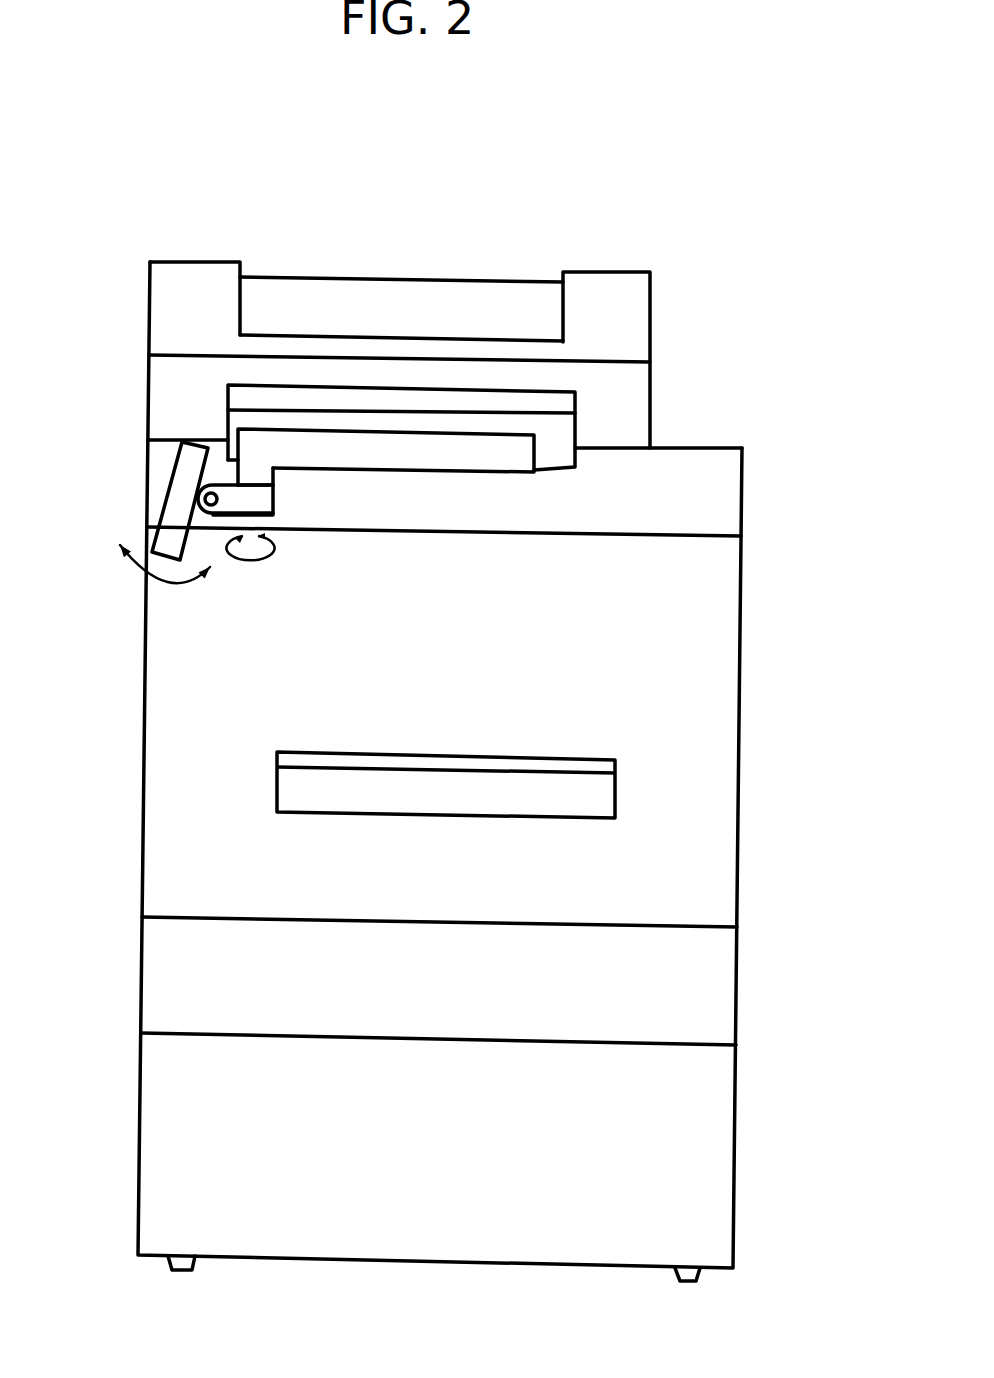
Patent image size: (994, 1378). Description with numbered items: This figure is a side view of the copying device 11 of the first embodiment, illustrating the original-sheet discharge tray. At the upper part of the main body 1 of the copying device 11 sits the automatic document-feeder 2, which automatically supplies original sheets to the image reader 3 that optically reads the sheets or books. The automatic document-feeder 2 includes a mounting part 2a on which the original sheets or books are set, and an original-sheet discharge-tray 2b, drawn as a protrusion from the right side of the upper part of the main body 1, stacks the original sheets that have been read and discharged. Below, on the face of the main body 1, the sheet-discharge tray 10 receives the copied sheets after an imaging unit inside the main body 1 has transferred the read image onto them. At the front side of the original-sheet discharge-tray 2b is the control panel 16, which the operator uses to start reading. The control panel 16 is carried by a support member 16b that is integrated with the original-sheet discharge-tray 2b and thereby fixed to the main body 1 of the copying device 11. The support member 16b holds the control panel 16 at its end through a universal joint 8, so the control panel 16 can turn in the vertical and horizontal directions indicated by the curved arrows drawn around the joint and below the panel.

The main body 1 is at (745, 568).
The automatic document-feeder 2 is at (612, 270).
The mounting part 2a is at (472, 297).
The original-sheet discharge-tray 2b is at (567, 428).
The image reader 3 is at (712, 460).
The universal joint 8 is at (203, 513).
The sheet-discharge tray 10 is at (588, 762).
The copying device 11 is at (398, 226).
The control panel 16 is at (168, 467).
The support member 16b is at (263, 445).